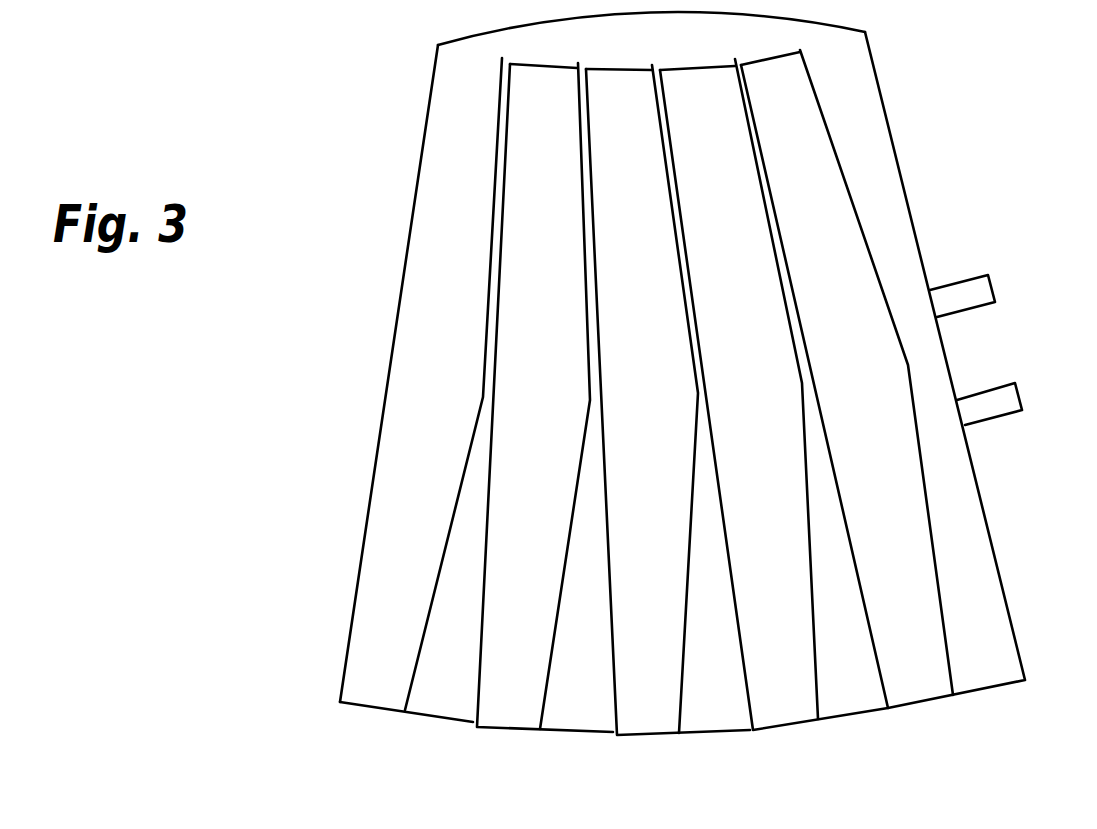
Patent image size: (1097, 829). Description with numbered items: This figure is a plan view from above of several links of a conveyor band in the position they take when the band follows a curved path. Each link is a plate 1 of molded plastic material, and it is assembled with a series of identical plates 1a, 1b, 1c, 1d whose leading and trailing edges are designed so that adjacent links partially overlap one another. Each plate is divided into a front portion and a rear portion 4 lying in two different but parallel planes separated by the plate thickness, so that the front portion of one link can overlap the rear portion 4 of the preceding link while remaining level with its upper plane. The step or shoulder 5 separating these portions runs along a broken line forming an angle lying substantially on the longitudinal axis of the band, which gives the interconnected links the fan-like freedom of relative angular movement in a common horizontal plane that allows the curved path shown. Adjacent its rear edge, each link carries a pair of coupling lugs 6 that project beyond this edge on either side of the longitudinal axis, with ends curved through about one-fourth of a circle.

The plate 1 is at (468, 84).
The plate 1a is at (532, 72).
The plate 1b is at (637, 77).
The plate 1c is at (702, 75).
The plate 1d is at (772, 65).
The rear portion 4 is at (447, 692).
The step or shoulder 5 is at (582, 148).
The coupling lugs 6 is at (978, 288).